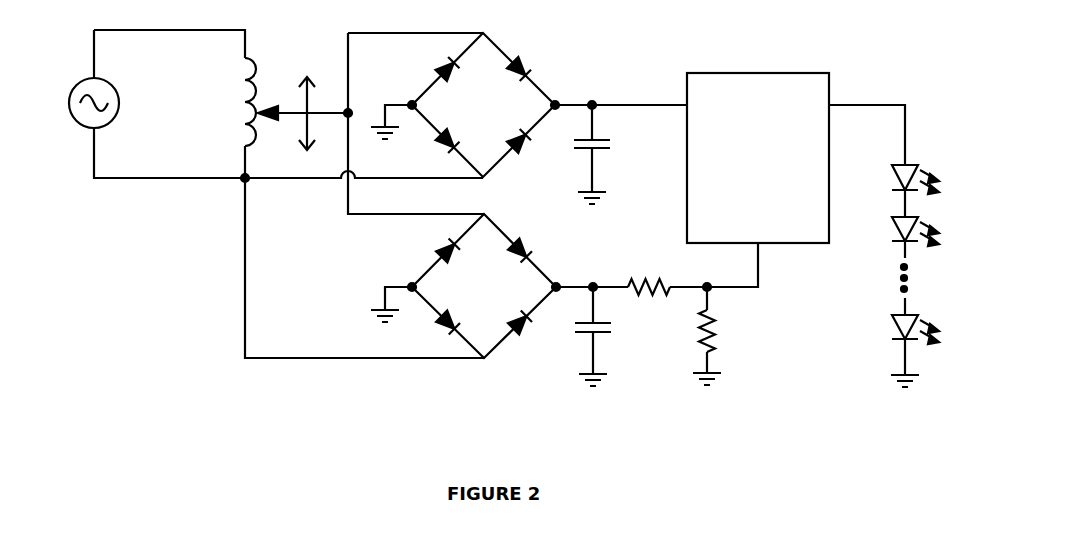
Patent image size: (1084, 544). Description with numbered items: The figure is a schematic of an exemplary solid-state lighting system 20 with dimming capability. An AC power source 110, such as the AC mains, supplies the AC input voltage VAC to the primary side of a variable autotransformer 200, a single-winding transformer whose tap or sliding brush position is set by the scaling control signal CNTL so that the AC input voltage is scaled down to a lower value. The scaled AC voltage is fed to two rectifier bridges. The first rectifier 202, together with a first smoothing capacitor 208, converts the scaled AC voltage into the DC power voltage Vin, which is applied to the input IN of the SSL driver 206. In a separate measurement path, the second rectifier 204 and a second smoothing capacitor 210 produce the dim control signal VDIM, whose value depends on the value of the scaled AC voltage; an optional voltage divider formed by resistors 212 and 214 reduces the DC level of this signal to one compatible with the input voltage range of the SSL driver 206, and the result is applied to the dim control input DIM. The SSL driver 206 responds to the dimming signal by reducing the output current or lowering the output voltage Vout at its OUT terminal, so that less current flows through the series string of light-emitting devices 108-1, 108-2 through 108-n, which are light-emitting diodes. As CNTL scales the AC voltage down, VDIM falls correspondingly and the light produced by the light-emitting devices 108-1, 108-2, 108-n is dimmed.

The SSL system 20 is at (158, 281).
The AC power source 110 is at (112, 128).
The variable autotransformer 200 is at (233, 103).
The first rectifier 202 is at (463, 105).
The second rectifier 204 is at (463, 286).
The SSL driver 206 is at (758, 67).
The first smoothing capacitor 208 is at (620, 147).
The second smoothing capacitor 210 is at (618, 327).
The resistor 212 is at (652, 270).
The resistor 214 is at (722, 335).
The light-emitting device 108-1 is at (888, 191).
The light-emitting device 108-2 is at (889, 237).
The light-emitting device 108-n is at (889, 342).